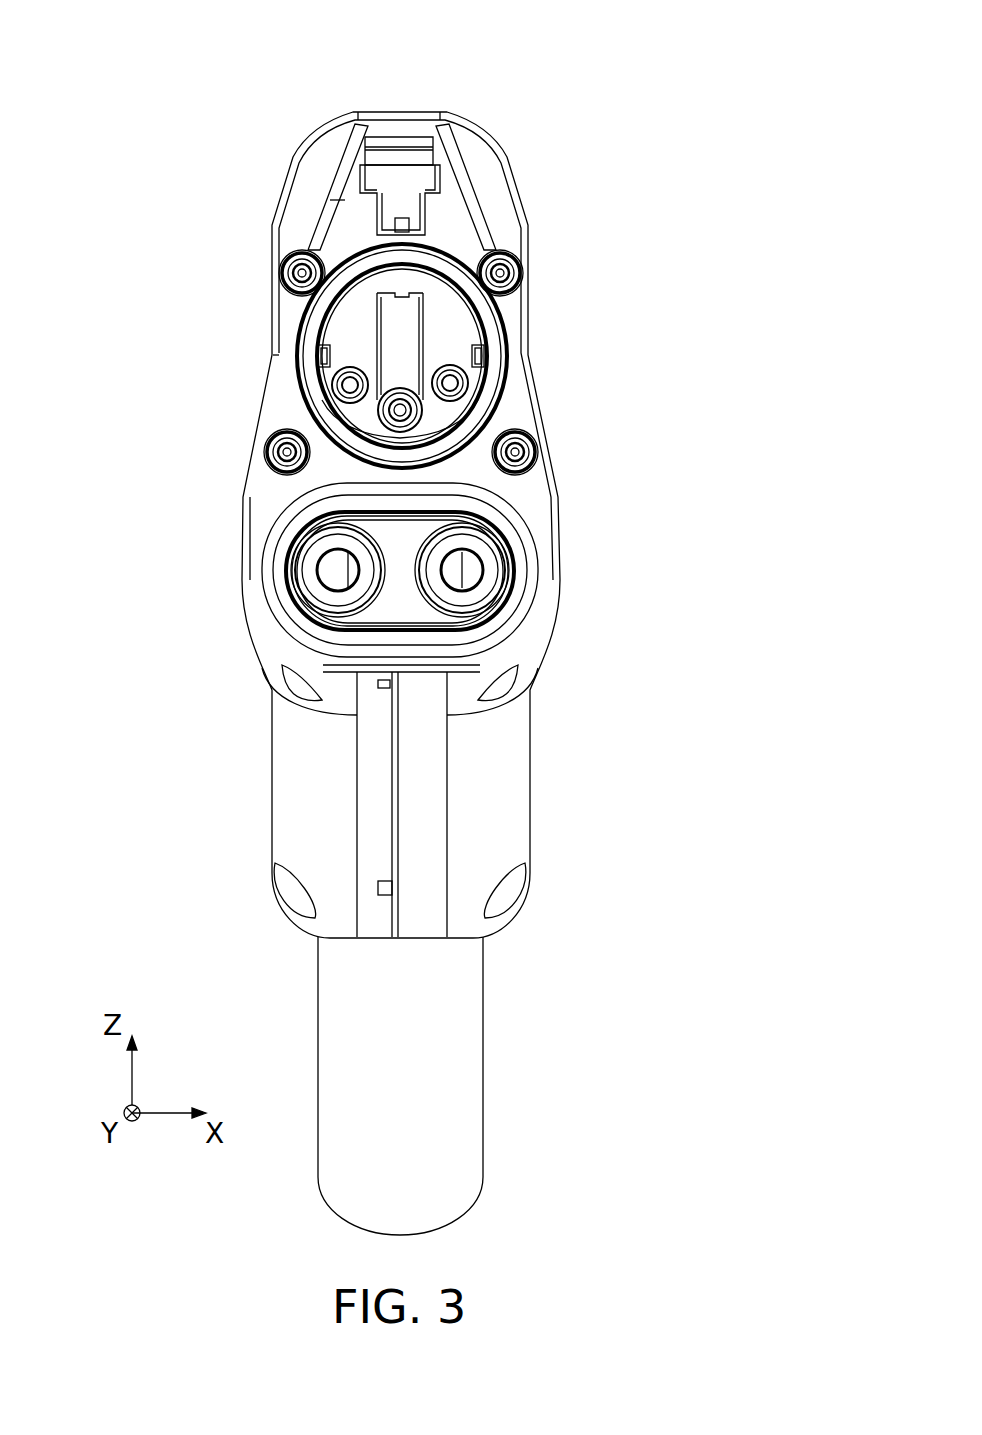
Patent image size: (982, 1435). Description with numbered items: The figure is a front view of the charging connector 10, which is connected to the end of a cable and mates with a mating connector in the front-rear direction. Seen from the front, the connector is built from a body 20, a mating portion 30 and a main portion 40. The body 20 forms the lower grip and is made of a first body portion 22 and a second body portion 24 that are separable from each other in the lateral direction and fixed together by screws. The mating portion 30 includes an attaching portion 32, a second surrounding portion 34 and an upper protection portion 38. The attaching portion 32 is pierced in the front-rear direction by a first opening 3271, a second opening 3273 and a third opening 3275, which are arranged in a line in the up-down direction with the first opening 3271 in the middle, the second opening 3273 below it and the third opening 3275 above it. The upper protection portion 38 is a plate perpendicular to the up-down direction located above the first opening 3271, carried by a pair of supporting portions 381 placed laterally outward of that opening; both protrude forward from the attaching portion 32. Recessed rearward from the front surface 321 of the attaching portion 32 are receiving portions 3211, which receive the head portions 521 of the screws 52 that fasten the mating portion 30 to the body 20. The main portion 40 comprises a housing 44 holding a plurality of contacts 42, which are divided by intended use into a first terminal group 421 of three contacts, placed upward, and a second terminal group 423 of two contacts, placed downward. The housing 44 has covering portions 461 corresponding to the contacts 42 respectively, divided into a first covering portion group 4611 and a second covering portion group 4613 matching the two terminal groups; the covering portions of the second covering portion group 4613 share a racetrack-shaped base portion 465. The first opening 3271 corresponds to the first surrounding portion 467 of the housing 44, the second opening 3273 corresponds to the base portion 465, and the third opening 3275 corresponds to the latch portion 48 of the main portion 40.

The charging connector 10 is at (417, 22).
The body 20 is at (272, 778).
The first body portion 22 is at (330, 804).
The second body portion 24 is at (532, 792).
The mating portion 30 is at (540, 612).
The attaching portion 32 is at (456, 525).
The second surrounding portion 34 is at (260, 568).
The upper protection portion 38 is at (412, 122).
The main portion 40 is at (415, 268).
The contacts 42 is at (310, 493).
The housing 44 is at (447, 327).
The latch portion 48 is at (397, 165).
The screw 52 is at (292, 257).
The front surface 321 is at (287, 362).
The supporting portions 381 is at (340, 163).
The first terminal group 421 is at (310, 493).
The second terminal group 423 is at (446, 385).
The covering portions 461 is at (501, 488).
The base portion 465 is at (497, 524).
The first surrounding portion 467 is at (318, 397).
The head portion 521 is at (397, 341).
The receiving portions 3211 is at (300, 273).
The first opening 3271 is at (462, 252).
The second opening 3273 is at (292, 504).
The third opening 3275 is at (358, 200).
The first covering portion group 4611 is at (501, 488).
The second covering portion group 4613 is at (360, 378).